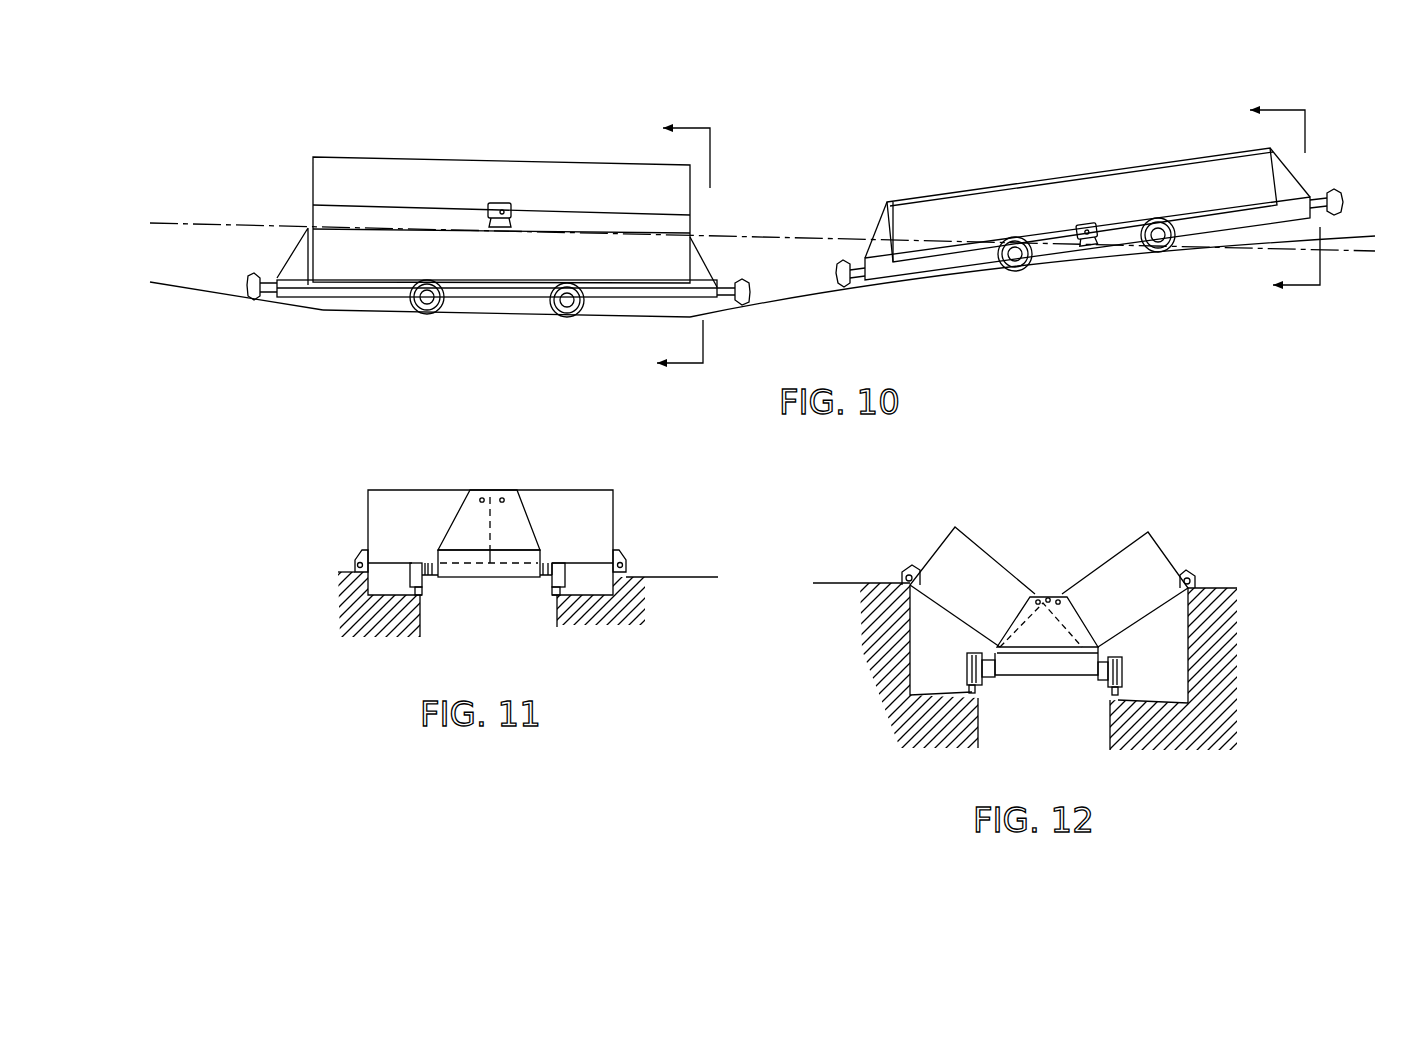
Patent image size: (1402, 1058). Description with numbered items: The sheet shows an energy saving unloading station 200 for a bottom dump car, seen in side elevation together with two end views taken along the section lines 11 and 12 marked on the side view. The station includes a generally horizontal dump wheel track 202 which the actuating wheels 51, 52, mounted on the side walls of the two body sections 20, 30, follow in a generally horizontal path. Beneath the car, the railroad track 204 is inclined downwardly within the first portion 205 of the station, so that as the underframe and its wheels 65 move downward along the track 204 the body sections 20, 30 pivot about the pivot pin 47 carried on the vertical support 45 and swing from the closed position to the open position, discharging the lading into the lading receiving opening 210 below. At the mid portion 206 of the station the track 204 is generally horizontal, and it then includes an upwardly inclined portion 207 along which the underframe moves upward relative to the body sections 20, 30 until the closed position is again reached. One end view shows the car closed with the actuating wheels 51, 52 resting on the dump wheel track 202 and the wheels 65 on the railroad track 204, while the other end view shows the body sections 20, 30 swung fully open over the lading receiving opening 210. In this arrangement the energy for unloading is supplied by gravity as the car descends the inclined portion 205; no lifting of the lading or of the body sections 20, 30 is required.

In FIG. 10, the unloading station 200 is at (317, 333).
In FIG. 10, the dump wheel track 202 is at (744, 235).
In FIG. 11, the dump wheel track 202 is at (716, 578).
In FIG. 12, the dump wheel track 202 is at (835, 583).
In FIG. 10, the railroad track 204 is at (597, 317).
In FIG. 11, the railroad track 204 is at (418, 590).
In FIG. 12, the railroad track 204 is at (1120, 700).
In FIG. 10, the first portion 205 is at (911, 286).
In FIG. 10, the mid portion 206 is at (463, 317).
In FIG. 10, the upwardly inclined portion 207 is at (178, 283).
In FIG. 12, the lading receiving opening 210 is at (1163, 730).
In FIG. 10, the vertical support 45 is at (700, 272).
In FIG. 11, the vertical support 45 is at (503, 523).
In FIG. 12, the vertical support 45 is at (1062, 643).
In FIG. 11, the pivot pin 47 is at (482, 497).
In FIG. 12, the pivot pin 47 is at (1038, 597).
In FIG. 11, the wheel 51 is at (357, 566).
In FIG. 10, the wheel 52 is at (497, 228).
In FIG. 11, the wheel 52 is at (624, 575).
In FIG. 11, the wheels 65 is at (565, 578).
In FIG. 12, the wheels 65 is at (972, 668).
In FIG. 11, the body section 20 is at (403, 512).
In FIG. 12, the body section 20 is at (963, 588).
In FIG. 11, the body section 30 is at (580, 518).
In FIG. 12, the body section 30 is at (1130, 590).
In FIG. 10, the line 11— 11 is at (1285, 196).
In FIG. 10, the line 12— 12 is at (684, 246).